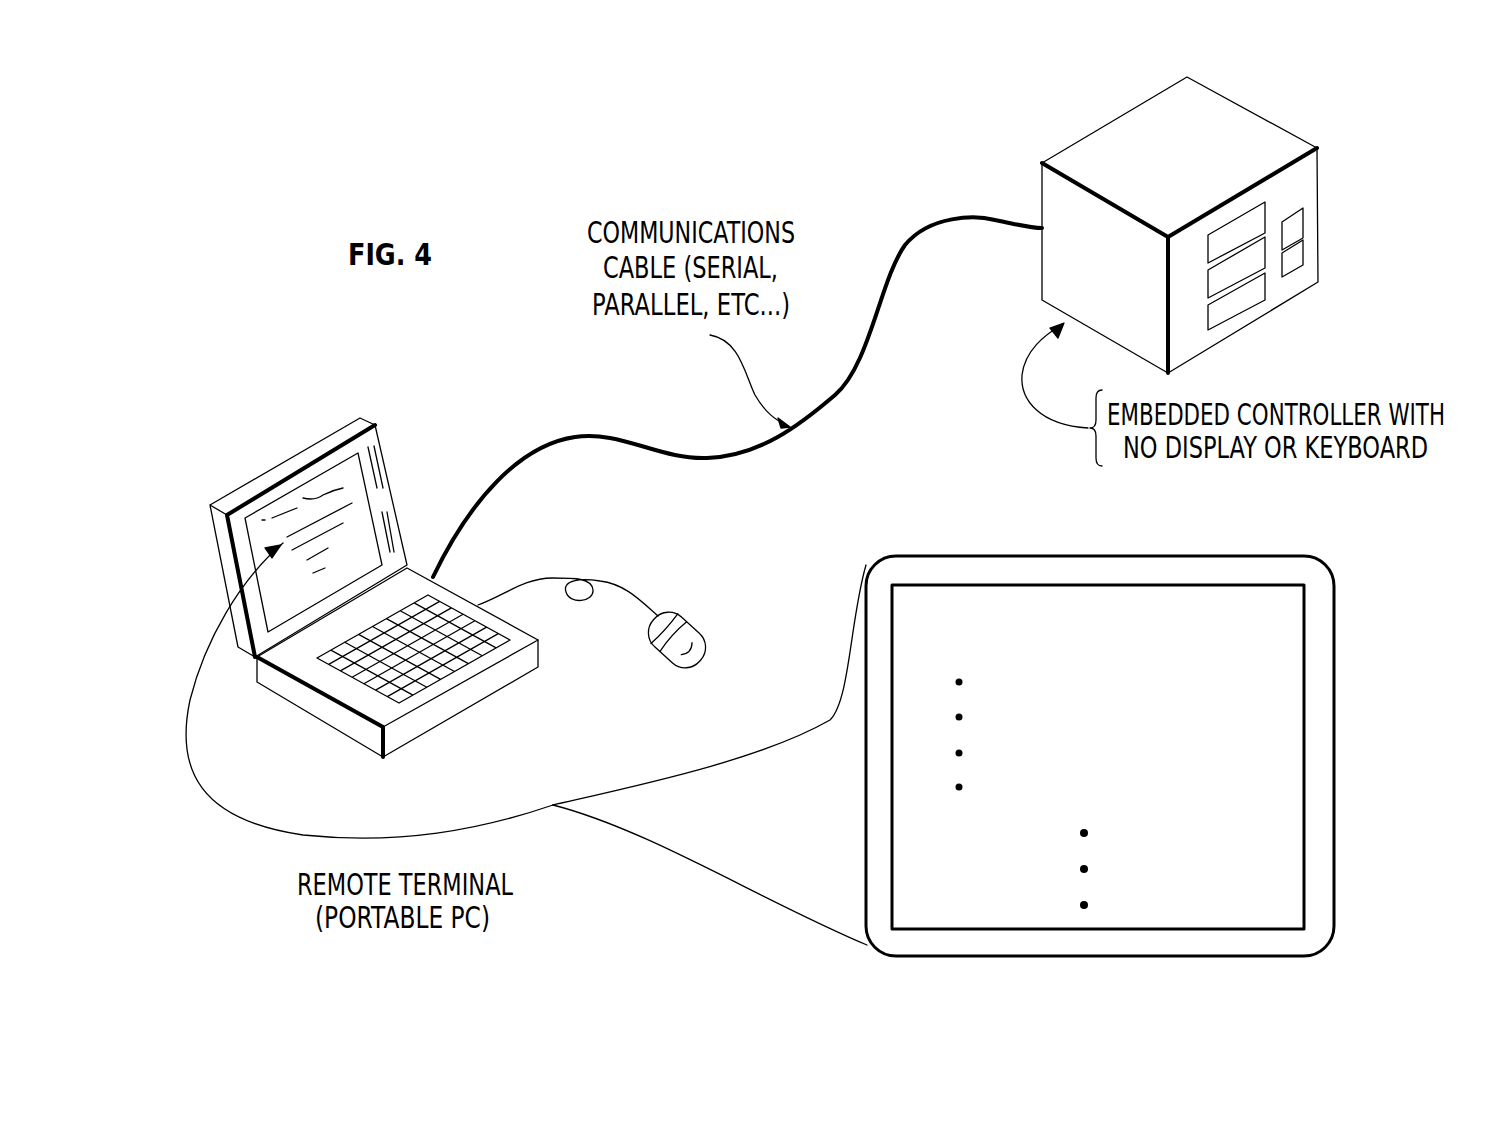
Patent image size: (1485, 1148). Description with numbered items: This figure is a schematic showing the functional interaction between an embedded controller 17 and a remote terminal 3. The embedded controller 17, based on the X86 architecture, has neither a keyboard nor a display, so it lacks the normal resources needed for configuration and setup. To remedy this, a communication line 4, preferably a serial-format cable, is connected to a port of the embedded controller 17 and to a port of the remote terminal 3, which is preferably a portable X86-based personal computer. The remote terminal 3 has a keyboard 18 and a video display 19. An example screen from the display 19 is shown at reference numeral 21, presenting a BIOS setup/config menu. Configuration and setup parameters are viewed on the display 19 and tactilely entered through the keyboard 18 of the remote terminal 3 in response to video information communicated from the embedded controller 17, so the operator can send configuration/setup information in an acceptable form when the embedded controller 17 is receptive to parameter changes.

The remote terminal 3 is at (461, 595).
The communication line 4 is at (842, 390).
The embedded controller 17 is at (1318, 205).
The keyboard 18 is at (418, 693).
The video display 19 is at (370, 500).
The example screen 21 is at (1344, 627).